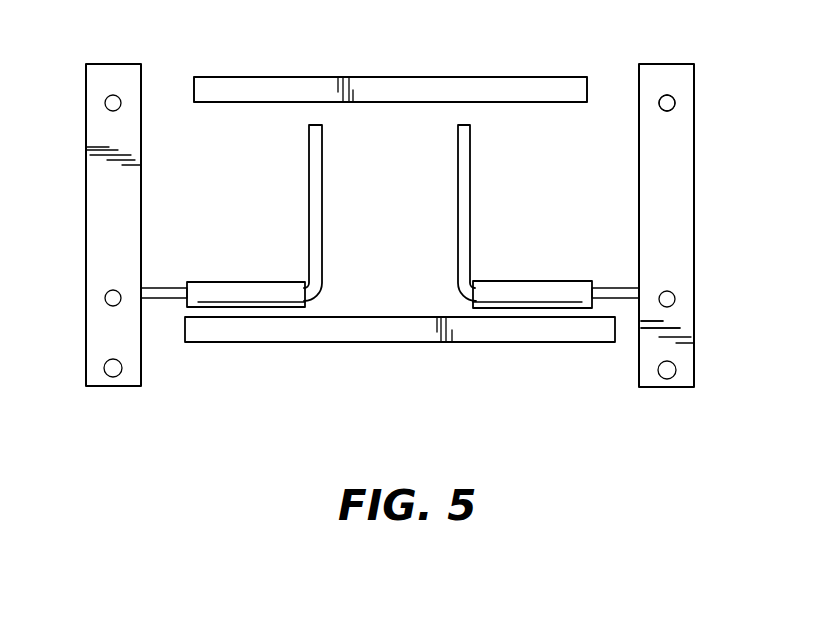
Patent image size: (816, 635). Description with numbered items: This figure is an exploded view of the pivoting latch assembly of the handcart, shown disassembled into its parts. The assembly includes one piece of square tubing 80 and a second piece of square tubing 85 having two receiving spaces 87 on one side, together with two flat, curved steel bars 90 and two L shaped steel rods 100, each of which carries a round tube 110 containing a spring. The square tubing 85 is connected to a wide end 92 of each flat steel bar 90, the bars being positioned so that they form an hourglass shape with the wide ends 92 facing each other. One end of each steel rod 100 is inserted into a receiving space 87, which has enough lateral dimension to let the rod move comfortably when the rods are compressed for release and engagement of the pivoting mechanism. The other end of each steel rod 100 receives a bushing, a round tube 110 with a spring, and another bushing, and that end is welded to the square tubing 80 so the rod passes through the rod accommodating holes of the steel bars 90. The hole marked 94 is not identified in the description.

The square tubing 80 is at (400, 342).
The second piece of square tubing 85 is at (392, 77).
The receiving spaces 87 is at (280, 100).
The flat, curved steel bars 90 is at (86, 322).
The wide end 92 is at (667, 273).
The mounting hole 94 is at (659, 103).
The L shaped steel rods 100 is at (453, 202).
The round tubes 110 is at (243, 307).